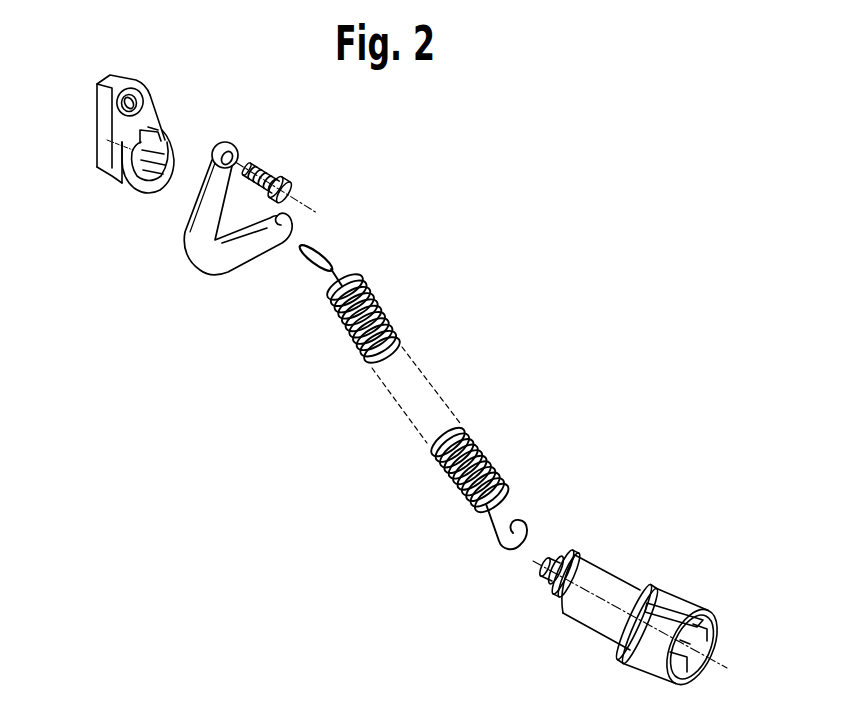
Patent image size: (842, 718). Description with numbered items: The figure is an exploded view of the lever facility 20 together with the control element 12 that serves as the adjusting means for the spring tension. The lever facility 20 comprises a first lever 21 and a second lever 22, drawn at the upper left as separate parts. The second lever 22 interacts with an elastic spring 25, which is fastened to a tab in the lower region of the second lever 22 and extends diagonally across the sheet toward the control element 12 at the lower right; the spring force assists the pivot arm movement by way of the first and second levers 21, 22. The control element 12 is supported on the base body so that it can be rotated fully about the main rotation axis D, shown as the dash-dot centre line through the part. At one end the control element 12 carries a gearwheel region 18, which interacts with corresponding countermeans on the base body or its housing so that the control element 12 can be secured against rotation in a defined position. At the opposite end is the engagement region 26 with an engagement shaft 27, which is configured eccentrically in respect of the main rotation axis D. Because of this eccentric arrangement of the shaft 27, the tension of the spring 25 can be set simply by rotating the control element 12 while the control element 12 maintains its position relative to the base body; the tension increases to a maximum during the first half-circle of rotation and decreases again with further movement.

The control element 12 is at (614, 578).
The gearwheel region 18 is at (690, 613).
The lever facility 20 is at (474, 243).
The first lever 21 is at (118, 173).
The second lever 22 is at (213, 262).
The elastic spring 25 is at (476, 448).
The engagement region 26 is at (570, 538).
The engagement shaft 27 is at (545, 589).
The main rotation axis D is at (607, 600).